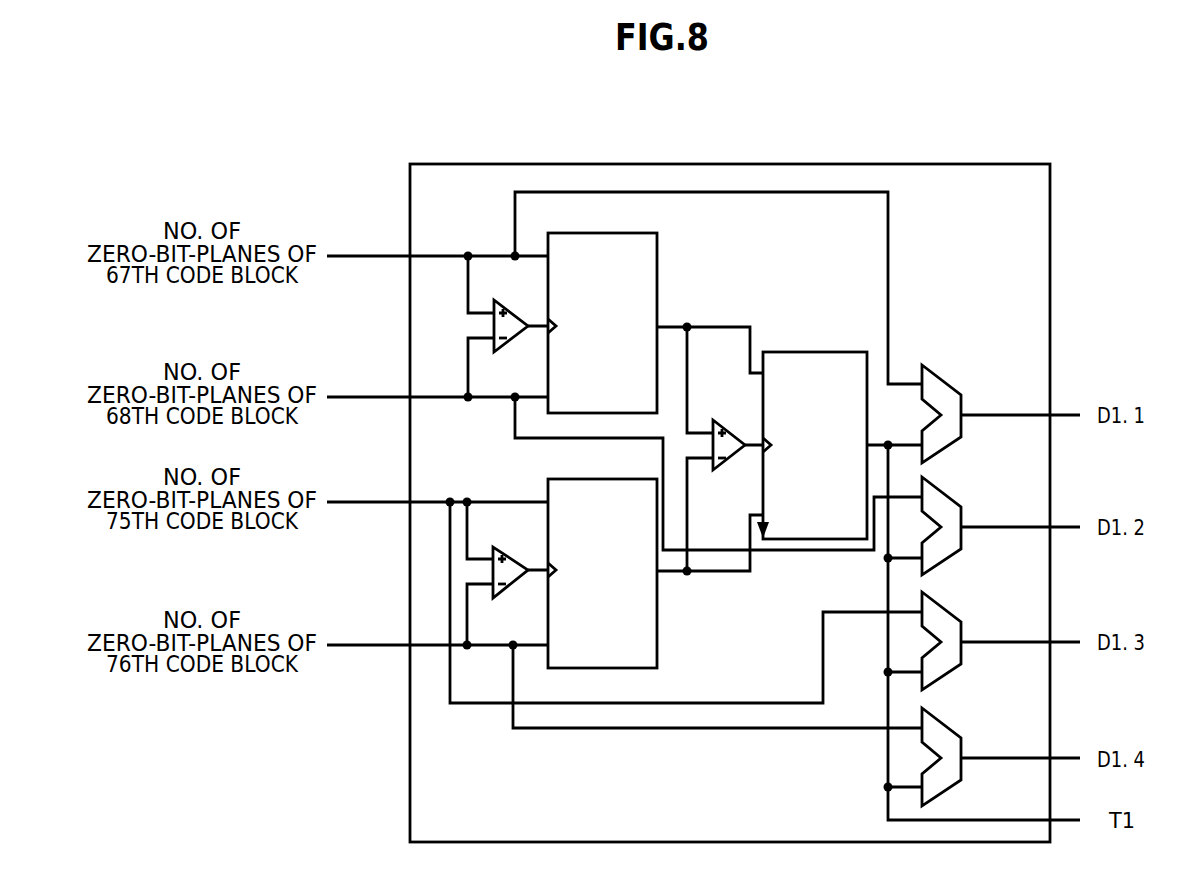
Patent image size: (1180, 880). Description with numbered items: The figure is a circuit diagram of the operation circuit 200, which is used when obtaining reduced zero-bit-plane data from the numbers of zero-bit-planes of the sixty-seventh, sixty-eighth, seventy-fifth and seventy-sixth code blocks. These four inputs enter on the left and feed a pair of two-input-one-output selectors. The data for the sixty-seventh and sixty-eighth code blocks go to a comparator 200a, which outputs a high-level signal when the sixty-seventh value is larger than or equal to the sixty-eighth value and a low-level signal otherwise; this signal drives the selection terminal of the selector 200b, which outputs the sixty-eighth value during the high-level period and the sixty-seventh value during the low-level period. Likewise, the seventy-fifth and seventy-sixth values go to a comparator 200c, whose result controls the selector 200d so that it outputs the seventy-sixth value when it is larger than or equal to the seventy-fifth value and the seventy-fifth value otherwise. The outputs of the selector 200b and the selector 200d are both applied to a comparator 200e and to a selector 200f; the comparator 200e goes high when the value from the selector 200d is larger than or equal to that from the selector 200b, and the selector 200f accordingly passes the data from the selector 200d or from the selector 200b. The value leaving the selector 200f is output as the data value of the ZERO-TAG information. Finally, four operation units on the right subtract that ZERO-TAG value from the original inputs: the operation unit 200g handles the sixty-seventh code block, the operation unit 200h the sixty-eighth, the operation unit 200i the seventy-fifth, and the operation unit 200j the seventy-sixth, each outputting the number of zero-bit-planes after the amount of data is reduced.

The operation circuit 200 is at (1024, 152).
The comparator 200a is at (513, 307).
The selector 200b is at (574, 233).
The comparator 200c is at (513, 551).
The selector 200d is at (572, 479).
The comparator 200e is at (732, 424).
The selector 200f is at (826, 352).
The operation unit 200g is at (962, 397).
The operation unit 200h is at (949, 497).
The operation unit 200i is at (951, 612).
The operation unit 200j is at (950, 727).